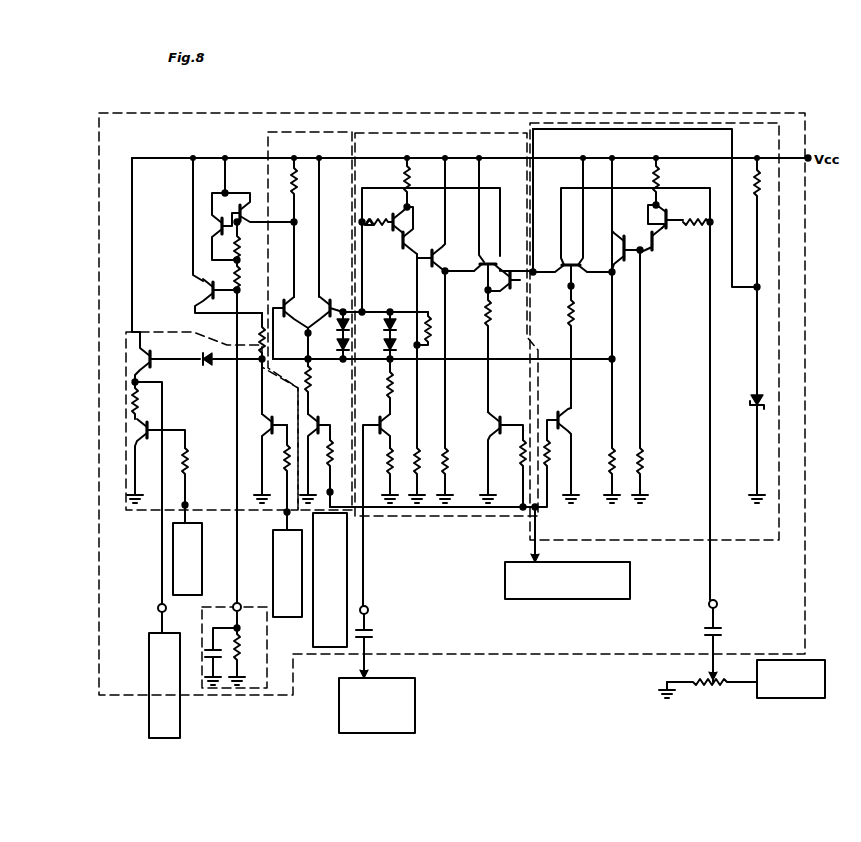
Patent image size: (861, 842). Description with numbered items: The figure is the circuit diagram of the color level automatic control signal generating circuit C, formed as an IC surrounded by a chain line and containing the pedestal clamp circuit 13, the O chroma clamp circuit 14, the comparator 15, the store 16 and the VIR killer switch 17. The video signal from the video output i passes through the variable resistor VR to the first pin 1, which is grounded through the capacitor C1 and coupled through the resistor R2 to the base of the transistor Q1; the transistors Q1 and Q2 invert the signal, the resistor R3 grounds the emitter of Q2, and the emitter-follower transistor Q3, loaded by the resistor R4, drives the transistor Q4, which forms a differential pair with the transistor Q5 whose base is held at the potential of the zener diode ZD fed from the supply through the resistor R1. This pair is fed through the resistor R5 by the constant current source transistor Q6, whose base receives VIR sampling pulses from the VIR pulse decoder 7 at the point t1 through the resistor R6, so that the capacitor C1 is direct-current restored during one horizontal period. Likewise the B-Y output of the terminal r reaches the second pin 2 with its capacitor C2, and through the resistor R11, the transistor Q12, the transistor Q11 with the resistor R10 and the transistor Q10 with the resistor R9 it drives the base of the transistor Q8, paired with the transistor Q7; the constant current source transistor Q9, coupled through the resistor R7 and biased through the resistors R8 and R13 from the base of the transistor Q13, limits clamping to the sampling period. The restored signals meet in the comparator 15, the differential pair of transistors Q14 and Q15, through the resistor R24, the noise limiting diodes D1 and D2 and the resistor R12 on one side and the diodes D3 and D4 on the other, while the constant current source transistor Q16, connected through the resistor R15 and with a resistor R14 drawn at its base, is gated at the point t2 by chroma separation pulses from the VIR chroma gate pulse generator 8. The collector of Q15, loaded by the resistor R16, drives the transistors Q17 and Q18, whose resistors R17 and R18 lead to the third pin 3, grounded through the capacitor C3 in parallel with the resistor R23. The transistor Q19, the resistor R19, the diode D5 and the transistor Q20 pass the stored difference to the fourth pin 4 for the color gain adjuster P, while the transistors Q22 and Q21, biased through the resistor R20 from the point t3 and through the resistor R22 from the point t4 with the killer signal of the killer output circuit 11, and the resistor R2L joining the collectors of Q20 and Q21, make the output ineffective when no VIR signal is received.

The VIR pulse decoder 7 is at (580, 599).
The VIR chroma gate pulse generator 8 is at (330, 647).
The killer output circuit 11 is at (202, 590).
The pedestal clamp circuit 13 is at (760, 540).
The O chroma clamp circuit 14 is at (457, 516).
The comparator 15 is at (312, 132).
The store 16 is at (267, 688).
The VIR killer switch 17 is at (124, 498).
The color level automatic control signal generating circuit C is at (470, 654).
The color gain adjuster P is at (175, 738).
The B-Y signal terminal r is at (382, 682).
The video output circuit i is at (746, 654).
The first pin 1 is at (717, 602).
The second pin 2 is at (368, 609).
The third pin 3 is at (241, 606).
The fourth pin 4 is at (166, 608).
The VIR sampling pulse point t1 is at (537, 509).
The chroma separation signal point t2 is at (332, 494).
The killer signal point t3 is at (286, 514).
The killer signal point t4 is at (186, 507).
The transistor Q1 is at (672, 204).
The transistor Q2 is at (654, 250).
The emitter-follower transistor Q3 is at (622, 236).
The transistor Q4 is at (612, 253).
The transistor Q5 is at (572, 272).
The constant current source transistor Q6 is at (568, 428).
The transistor Q7 is at (514, 290).
The transistor Q8 is at (489, 224).
The constant current source transistor Q9 is at (505, 408).
The transistor Q10 is at (450, 255).
The transistor Q11 is at (408, 240).
The transistor Q12 is at (392, 214).
The transistor Q13 is at (382, 416).
The transistor Q14 is at (340, 288).
The transistor Q15 is at (286, 296).
The constant current source transistor Q16 is at (322, 416).
The transistor Q17 is at (252, 205).
The transistor Q18 is at (226, 226).
The transistor Q19 is at (220, 290).
The transistor Q20 is at (168, 350).
The transistor Q21 is at (136, 432).
The transistor Q22 is at (263, 431).
The resistor R1 is at (767, 185).
The resistor R2 is at (700, 232).
The resistor R2L is at (134, 398).
The resistor R3 is at (644, 470).
The resistor R4 is at (608, 470).
The resistor R5 is at (575, 312).
The resistor R6 is at (551, 460).
The resistor R7 is at (492, 312).
The resistor R8 is at (519, 460).
The resistor R9 is at (449, 460).
The resistor R10 is at (421, 460).
The resistor R11 is at (378, 242).
The resistor R12 is at (384, 372).
The resistor R13 is at (386, 458).
The resistor R14 is at (334, 460).
The resistor R15 is at (312, 380).
The resistor R16 is at (303, 227).
The resistor R17 is at (241, 246).
The resistor R18 is at (241, 276).
The resistor R19 is at (252, 336).
The resistor R20 is at (300, 466).
The resistor R22 is at (202, 468).
The resistor R23 is at (241, 652).
The resistor R24 is at (430, 314).
The noise elimination limiter diode D1 is at (389, 324).
The noise elimination limiter diode D2 is at (389, 344).
The noise eliminating limiter diode D3 is at (331, 332).
The noise eliminating limiter diode D4 is at (343, 356).
The diode D5 is at (205, 368).
The capacitor C1 is at (722, 630).
The capacitor C2 is at (373, 636).
The capacitor C3 is at (208, 652).
The zener diode ZD is at (754, 410).
The variable resistor VR is at (708, 686).